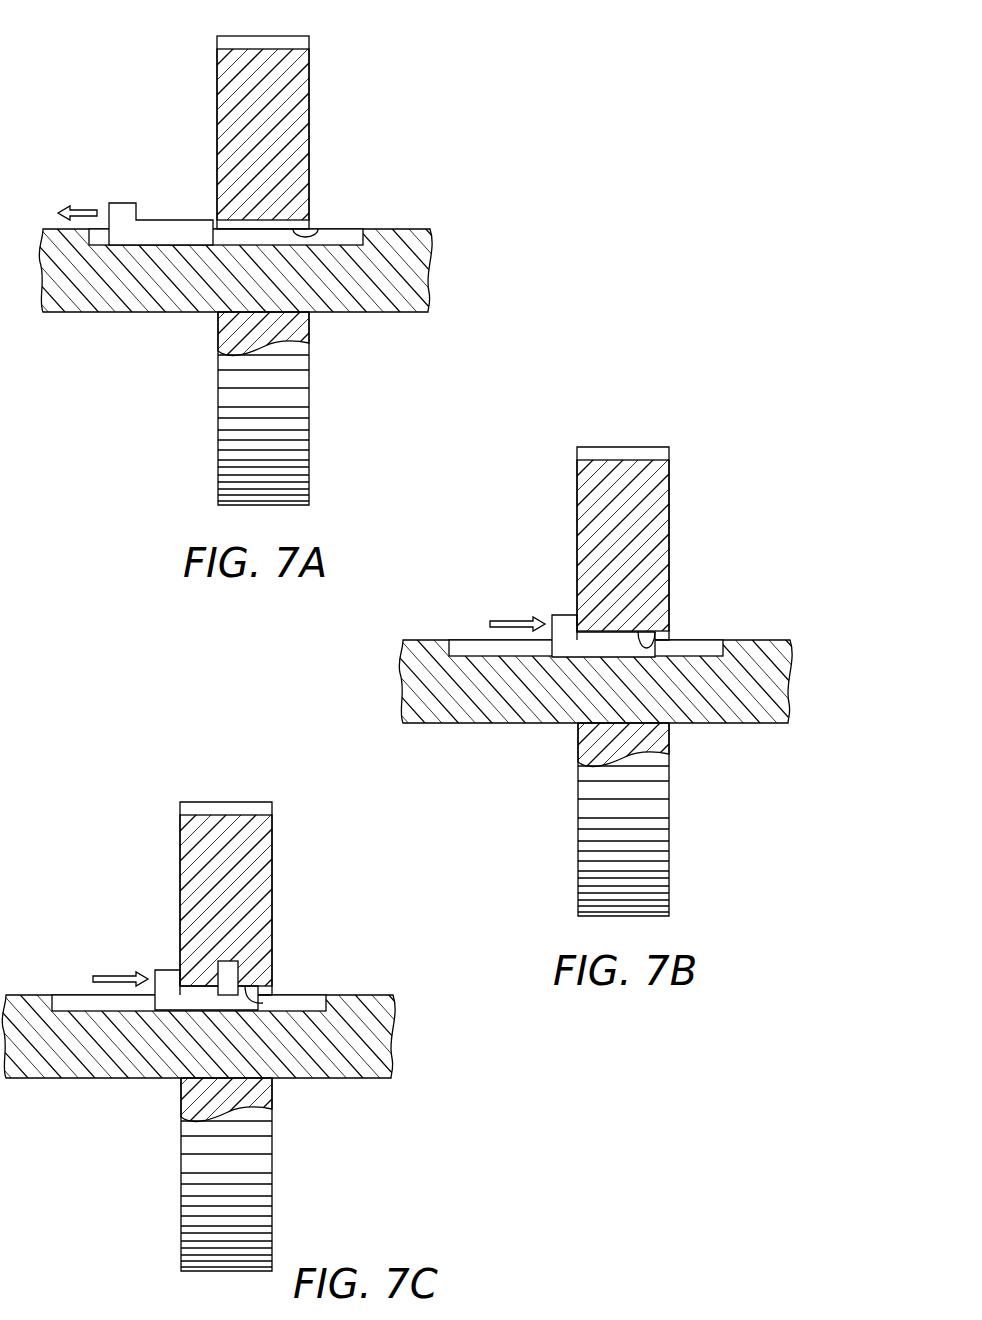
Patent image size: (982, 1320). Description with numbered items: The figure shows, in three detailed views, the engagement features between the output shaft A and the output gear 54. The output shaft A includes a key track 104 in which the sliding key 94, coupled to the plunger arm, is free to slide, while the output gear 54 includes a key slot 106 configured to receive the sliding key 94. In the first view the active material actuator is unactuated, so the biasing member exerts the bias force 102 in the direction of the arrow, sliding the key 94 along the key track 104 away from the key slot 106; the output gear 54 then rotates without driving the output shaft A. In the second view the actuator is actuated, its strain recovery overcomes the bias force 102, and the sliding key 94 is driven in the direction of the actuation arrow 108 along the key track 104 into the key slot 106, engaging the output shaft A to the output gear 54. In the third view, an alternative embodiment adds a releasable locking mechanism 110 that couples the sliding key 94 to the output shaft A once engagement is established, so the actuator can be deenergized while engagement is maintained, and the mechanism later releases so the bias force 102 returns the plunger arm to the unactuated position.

In FIG. 7A, the output gear 54 is at (210, 76).
In FIG. 7B, the output gear 54 is at (650, 670).
In FIG. 7C, the output gear 54 is at (253, 1025).
In FIG. 7A, the sliding key 94 is at (184, 218).
In FIG. 7B, the sliding key 94 is at (597, 594).
In FIG. 7C, the sliding key 94 is at (200, 947).
In FIG. 7A, the bias force 102 is at (86, 205).
In FIG. 7A, the key track 104 is at (338, 239).
In FIG. 7B, the key track 104 is at (589, 717).
In FIG. 7C, the key track 104 is at (191, 1071).
In FIG. 7A, the key slot 106 is at (318, 229).
In FIG. 7B, the key slot 106 is at (707, 626).
In FIG. 7C, the key slot 106 is at (318, 980).
In FIG. 7B, the actuation arrow 108 is at (495, 587).
In FIG. 7C, the actuation arrow 108 is at (96, 943).
In FIG. 7C, the releasable locking mechanism 110 is at (276, 943).
In FIG. 7A, the output shaft A is at (451, 244).
In FIG. 7B, the output shaft A is at (597, 666).
In FIG. 7C, the output shaft A is at (233, 1021).